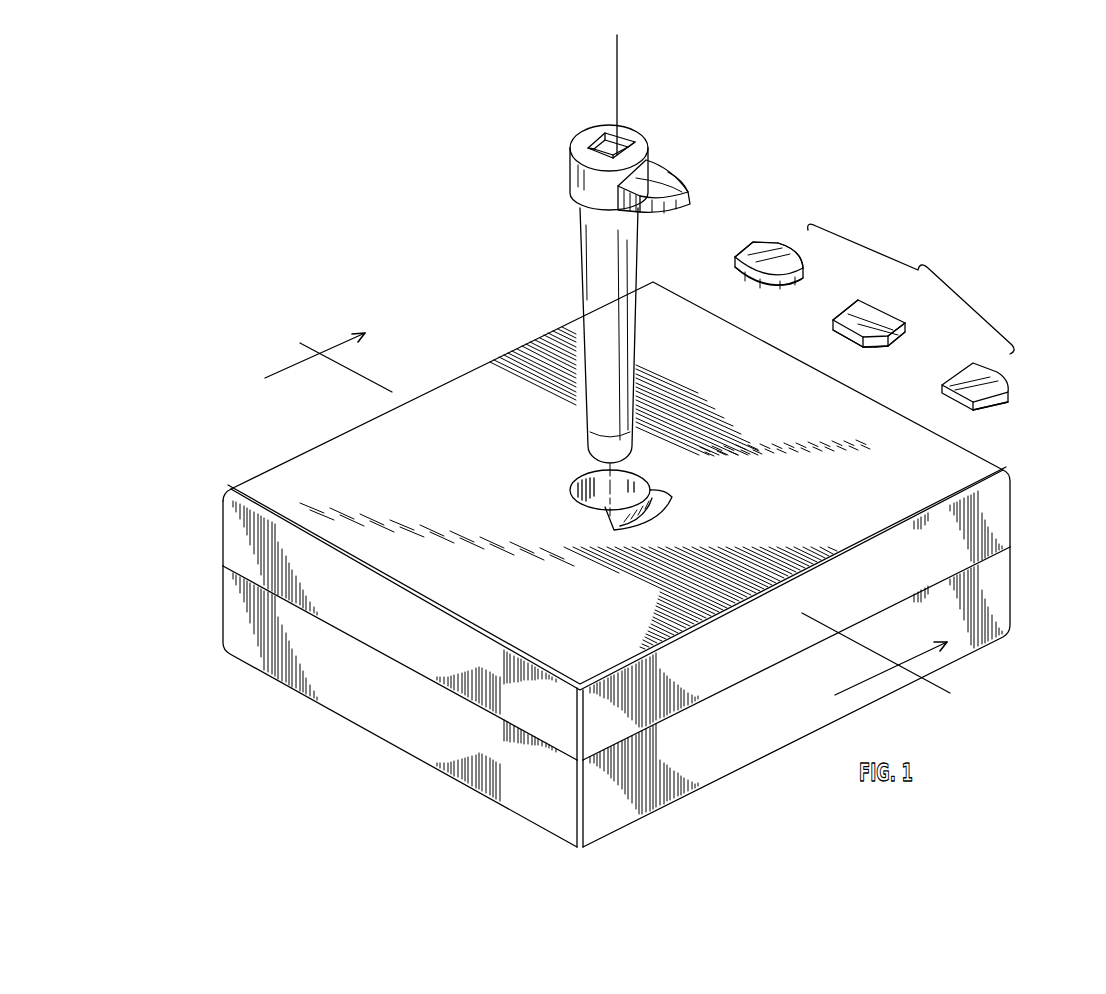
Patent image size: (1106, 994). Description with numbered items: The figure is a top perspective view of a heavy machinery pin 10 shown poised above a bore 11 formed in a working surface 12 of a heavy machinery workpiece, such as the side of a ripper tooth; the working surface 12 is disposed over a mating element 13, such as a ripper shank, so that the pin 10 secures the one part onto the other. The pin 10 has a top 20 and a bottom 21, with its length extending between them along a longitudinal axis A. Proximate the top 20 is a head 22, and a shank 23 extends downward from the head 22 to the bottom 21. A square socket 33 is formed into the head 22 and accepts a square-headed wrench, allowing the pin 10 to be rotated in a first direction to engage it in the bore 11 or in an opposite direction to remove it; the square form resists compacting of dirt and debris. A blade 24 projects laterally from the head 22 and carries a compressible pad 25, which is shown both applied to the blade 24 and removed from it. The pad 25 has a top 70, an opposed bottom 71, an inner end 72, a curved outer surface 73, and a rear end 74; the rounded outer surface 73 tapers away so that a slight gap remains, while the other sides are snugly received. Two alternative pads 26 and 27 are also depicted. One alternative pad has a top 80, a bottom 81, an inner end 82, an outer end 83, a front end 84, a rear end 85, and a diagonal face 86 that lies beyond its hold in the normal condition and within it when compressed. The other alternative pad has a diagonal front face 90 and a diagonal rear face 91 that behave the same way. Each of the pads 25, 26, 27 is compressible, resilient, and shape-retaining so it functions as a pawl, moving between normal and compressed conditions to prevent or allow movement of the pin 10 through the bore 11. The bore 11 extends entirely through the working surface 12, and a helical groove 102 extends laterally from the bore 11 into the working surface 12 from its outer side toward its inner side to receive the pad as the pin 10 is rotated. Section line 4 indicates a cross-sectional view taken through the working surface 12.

The section line 4 is at (607, 525).
The longitudinal axis A is at (618, 73).
The heavy machinery pin 10 is at (567, 275).
The bore 11 is at (619, 479).
The working surface 12 is at (581, 521).
The mating element 13 is at (237, 624).
The top 20 is at (612, 149).
The bottom 21 is at (634, 455).
The head 22 is at (570, 178).
The shank 23 is at (593, 336).
The blade 24 is at (680, 162).
The pad 25 is at (685, 188).
The pad 26 is at (880, 309).
The pad 27 is at (1004, 397).
The square socket 33 is at (628, 140).
The top 70 is at (764, 250).
The bottom 71 is at (762, 283).
The inner end 72 is at (752, 247).
The curved outer surface 73 is at (745, 273).
The rear end 74 is at (790, 251).
The top 80 is at (878, 333).
The bottom 81 is at (868, 346).
The inner end 82 is at (852, 307).
The outer end 83 is at (898, 334).
The front end 84 is at (850, 333).
The rear end 85 is at (904, 318).
The diagonal face 86 is at (878, 343).
The diagonal front face 90 is at (1001, 405).
The diagonal rear face 91 is at (1010, 400).
The helical groove 102 is at (649, 516).